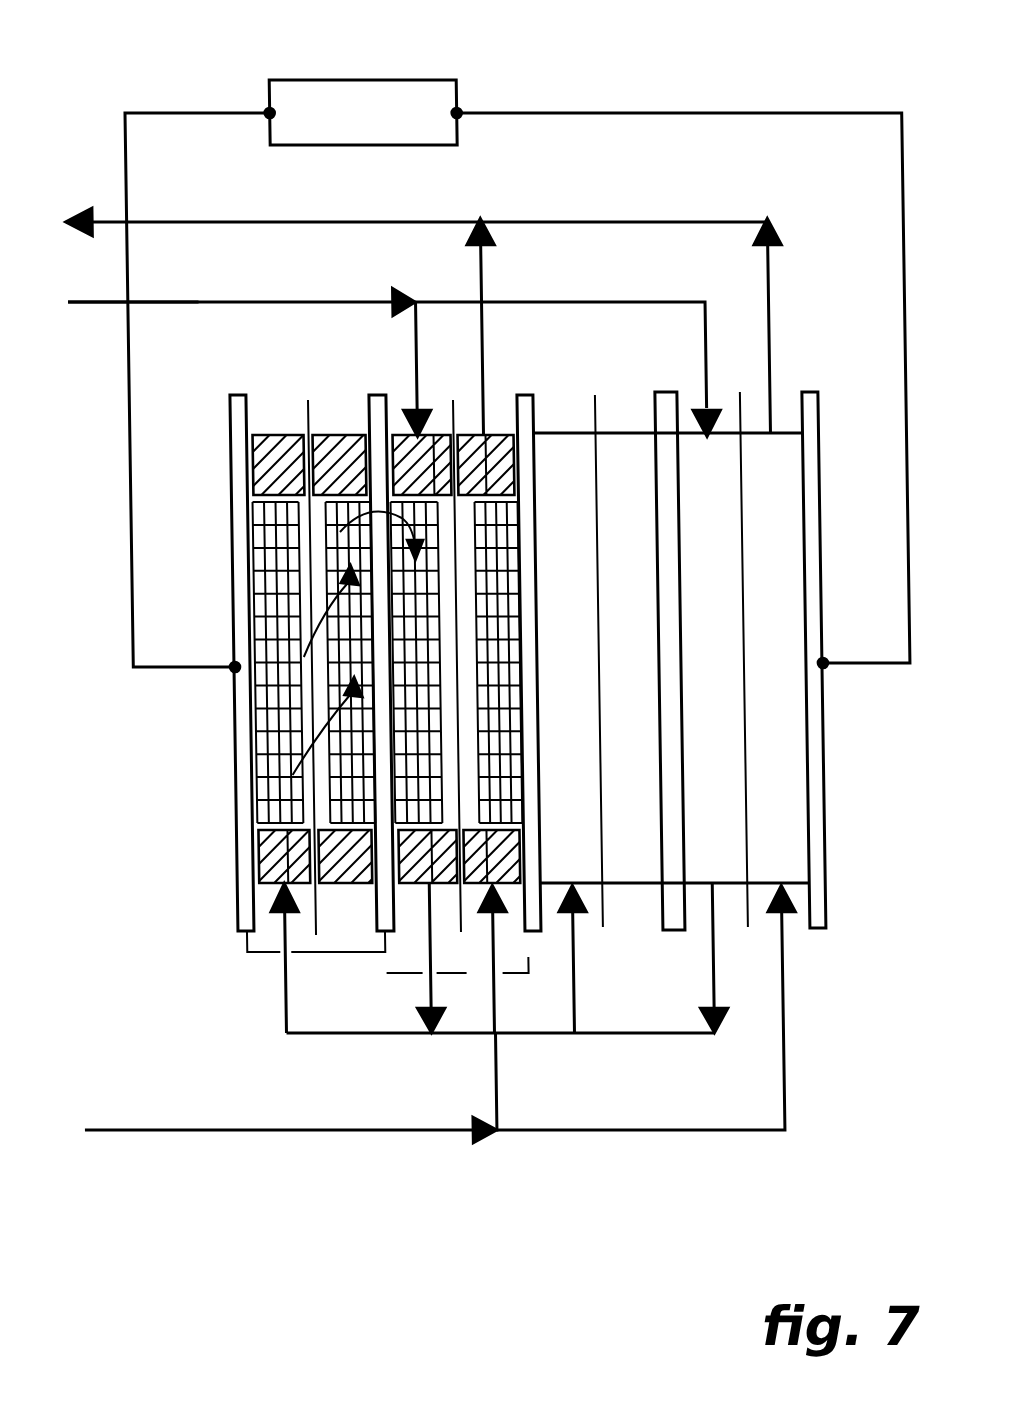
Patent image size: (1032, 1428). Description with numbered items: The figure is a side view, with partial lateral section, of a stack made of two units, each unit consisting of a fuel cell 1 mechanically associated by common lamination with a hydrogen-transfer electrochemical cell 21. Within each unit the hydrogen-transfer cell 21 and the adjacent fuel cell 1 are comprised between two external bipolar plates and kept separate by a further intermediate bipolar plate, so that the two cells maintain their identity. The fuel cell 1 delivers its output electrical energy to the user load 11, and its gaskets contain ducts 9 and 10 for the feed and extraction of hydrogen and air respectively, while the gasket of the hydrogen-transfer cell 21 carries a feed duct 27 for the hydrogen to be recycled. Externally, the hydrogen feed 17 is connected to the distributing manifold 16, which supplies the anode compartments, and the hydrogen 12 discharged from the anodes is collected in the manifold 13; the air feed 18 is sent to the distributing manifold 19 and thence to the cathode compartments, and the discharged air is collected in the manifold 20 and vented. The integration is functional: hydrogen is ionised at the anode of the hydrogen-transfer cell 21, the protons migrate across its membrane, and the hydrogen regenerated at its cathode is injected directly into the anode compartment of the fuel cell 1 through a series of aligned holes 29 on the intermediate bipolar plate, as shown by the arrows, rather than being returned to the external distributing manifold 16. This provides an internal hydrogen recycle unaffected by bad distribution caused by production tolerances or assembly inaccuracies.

The fuel cell 1 is at (378, 973).
The hydrogen feed/extraction duct 9 is at (423, 852).
The air feed/extraction duct 10 is at (589, 945).
The user load 11 is at (357, 115).
The hydrogen 12 is at (588, 988).
The manifold 13 is at (507, 1038).
The distributing manifold 16 is at (594, 292).
The hydrogen feed 17 is at (88, 312).
The air feed 18 is at (432, 1140).
The distributing manifold 19 is at (565, 1140).
The manifold 20 is at (593, 208).
The hydrogen-transfer electrochemical cell 21 is at (239, 952).
The feed duct for hydrogen to be recycled 27 is at (276, 860).
The aligned holes 29 is at (367, 505).